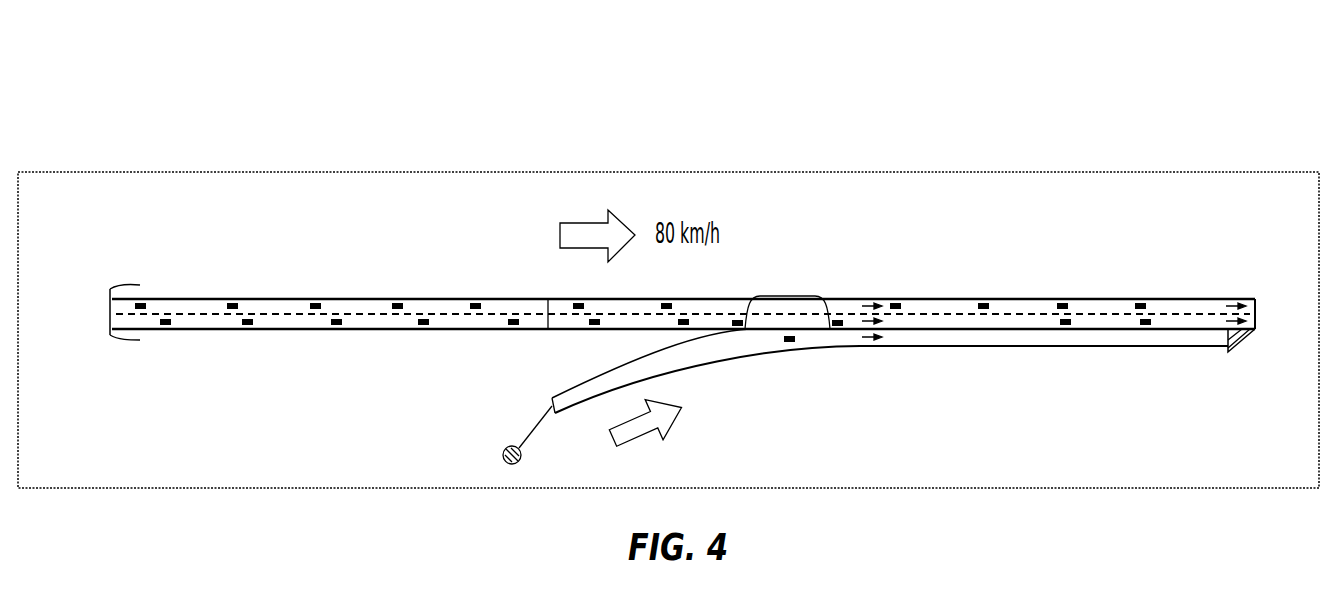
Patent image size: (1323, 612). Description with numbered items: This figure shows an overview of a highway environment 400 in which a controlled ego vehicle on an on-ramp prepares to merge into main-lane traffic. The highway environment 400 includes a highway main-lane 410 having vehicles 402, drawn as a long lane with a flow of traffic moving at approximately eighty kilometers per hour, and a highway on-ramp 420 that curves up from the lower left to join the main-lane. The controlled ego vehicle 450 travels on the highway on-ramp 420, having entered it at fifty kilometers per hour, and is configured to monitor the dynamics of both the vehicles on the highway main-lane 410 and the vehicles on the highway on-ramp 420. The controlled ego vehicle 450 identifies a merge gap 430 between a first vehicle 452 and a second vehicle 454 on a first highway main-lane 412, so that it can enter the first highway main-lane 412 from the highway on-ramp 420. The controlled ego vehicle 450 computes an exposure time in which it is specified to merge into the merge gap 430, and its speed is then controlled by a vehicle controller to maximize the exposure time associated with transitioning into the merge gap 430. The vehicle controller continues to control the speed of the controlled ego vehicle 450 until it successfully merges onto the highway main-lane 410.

The highway environment 400 is at (116, 100).
The vehicles 402 is at (985, 302).
The highway main-lane 410 is at (110, 314).
The first highway main-lane 412 is at (1257, 329).
The highway on-ramp 420 is at (577, 404).
The merge gap 430 is at (787, 296).
The controlled ego vehicle 450 is at (792, 343).
The first vehicle 452 is at (741, 328).
The second vehicle 454 is at (838, 328).